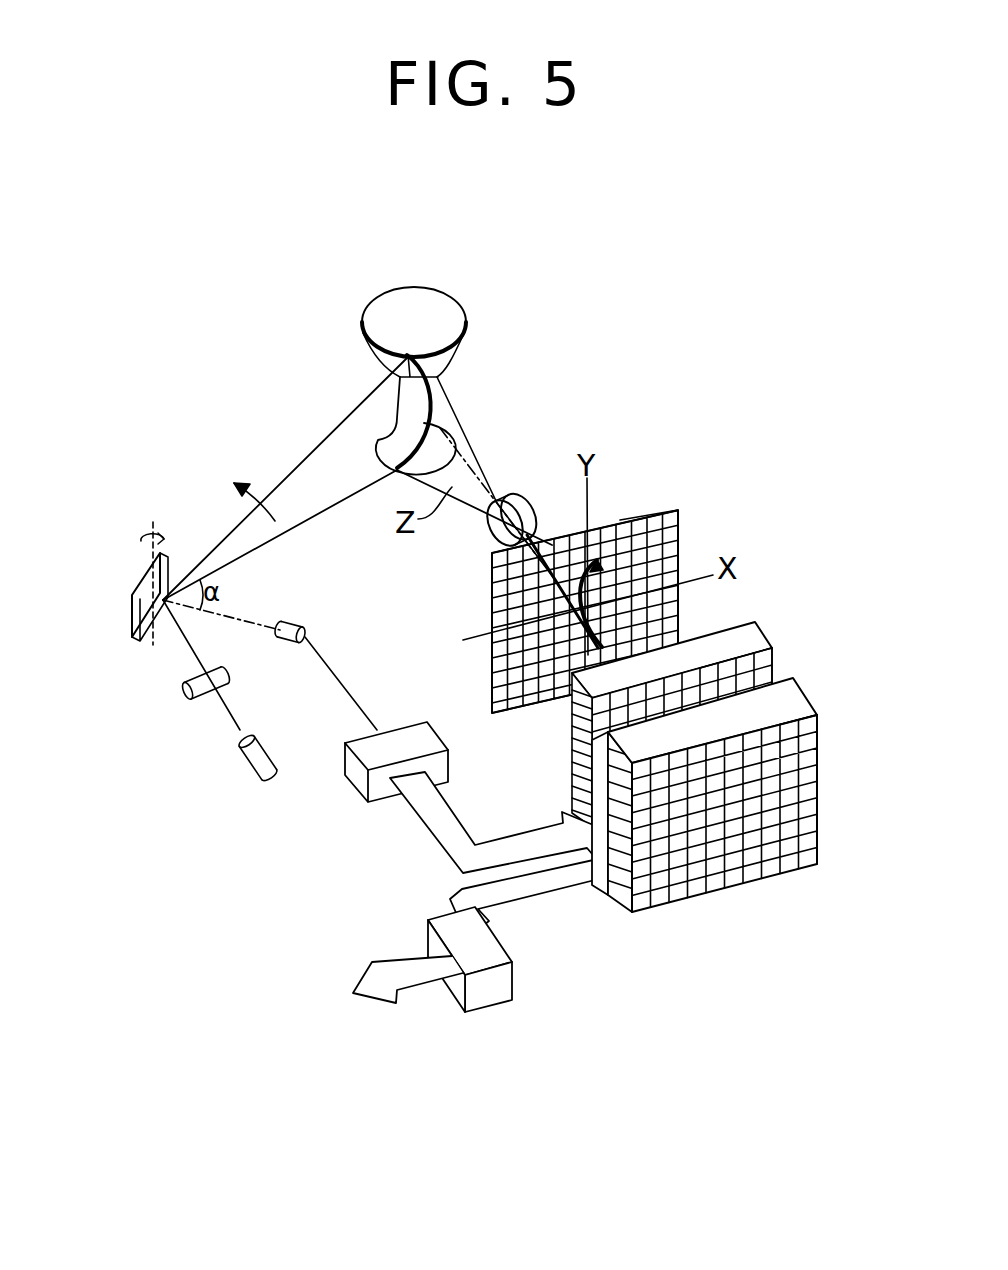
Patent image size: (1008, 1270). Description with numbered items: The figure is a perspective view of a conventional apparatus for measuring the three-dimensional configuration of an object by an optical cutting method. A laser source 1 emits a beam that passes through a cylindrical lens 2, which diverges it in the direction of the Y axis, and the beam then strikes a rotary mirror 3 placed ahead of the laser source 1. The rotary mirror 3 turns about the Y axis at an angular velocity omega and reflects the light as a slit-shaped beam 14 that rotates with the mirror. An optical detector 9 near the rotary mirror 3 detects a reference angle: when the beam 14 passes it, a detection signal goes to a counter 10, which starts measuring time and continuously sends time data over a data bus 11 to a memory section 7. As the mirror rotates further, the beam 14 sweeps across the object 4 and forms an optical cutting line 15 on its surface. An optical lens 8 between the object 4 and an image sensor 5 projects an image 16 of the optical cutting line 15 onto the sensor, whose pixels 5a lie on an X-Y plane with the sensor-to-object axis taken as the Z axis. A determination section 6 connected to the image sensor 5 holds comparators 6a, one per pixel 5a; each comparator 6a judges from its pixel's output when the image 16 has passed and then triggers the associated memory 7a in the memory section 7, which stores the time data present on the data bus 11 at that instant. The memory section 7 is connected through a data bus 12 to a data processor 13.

The laser source 1 is at (248, 762).
The cylindrical lens 2 is at (190, 694).
The rotary mirror 3 is at (132, 608).
The object 4 is at (425, 310).
The image sensor 5 is at (641, 512).
The pixels 5a is at (667, 518).
The determination section 6 is at (722, 648).
The comparators 6a is at (770, 650).
The memory section 7 is at (780, 707).
The memories 7a is at (820, 715).
The optical lens 8 is at (507, 503).
The optical detector 9 is at (300, 623).
The counter 10 is at (392, 783).
The data bus 11 is at (532, 842).
The data bus 12 is at (537, 880).
The data processor 13 is at (490, 978).
The slit-shaped beam 14 is at (332, 463).
The optical cutting line 15 is at (455, 418).
The image 16 is at (600, 588).